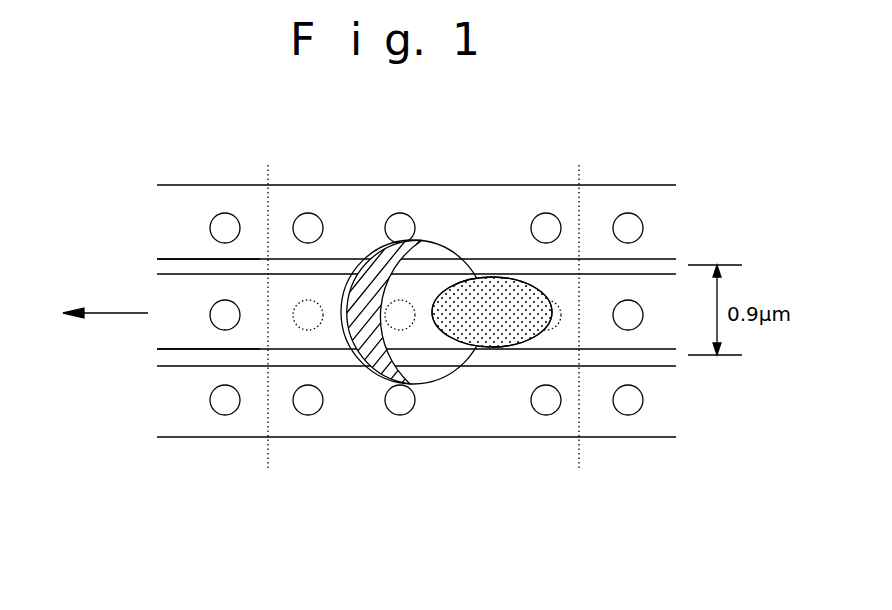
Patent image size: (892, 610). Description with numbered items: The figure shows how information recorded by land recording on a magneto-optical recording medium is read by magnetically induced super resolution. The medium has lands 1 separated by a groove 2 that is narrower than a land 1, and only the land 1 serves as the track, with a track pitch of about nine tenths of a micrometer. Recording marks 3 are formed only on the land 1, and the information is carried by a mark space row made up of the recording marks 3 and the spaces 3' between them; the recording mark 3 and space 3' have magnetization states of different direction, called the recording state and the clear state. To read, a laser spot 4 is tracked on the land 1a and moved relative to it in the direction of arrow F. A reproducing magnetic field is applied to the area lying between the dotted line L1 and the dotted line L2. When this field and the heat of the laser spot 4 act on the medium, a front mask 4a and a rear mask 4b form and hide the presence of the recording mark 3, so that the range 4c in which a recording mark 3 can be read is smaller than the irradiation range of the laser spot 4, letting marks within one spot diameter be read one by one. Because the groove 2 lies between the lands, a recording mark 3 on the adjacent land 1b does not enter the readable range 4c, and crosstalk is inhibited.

The land 1 is at (82, 190).
The land in which the laser spot is tracked 1a is at (180, 313).
The adjacent land 1b is at (176, 241).
The groove 2 is at (253, 267).
The recording mark 3 is at (426, 210).
The space 3' is at (426, 471).
The laser spot 4 is at (466, 226).
The front mask 4a is at (378, 363).
The rear mask 4b is at (503, 337).
The range in which the recording mark can be read 4c is at (435, 372).
The dotted line L1 is at (268, 458).
The dotted line L2 is at (580, 453).
The arrow F is at (105, 328).